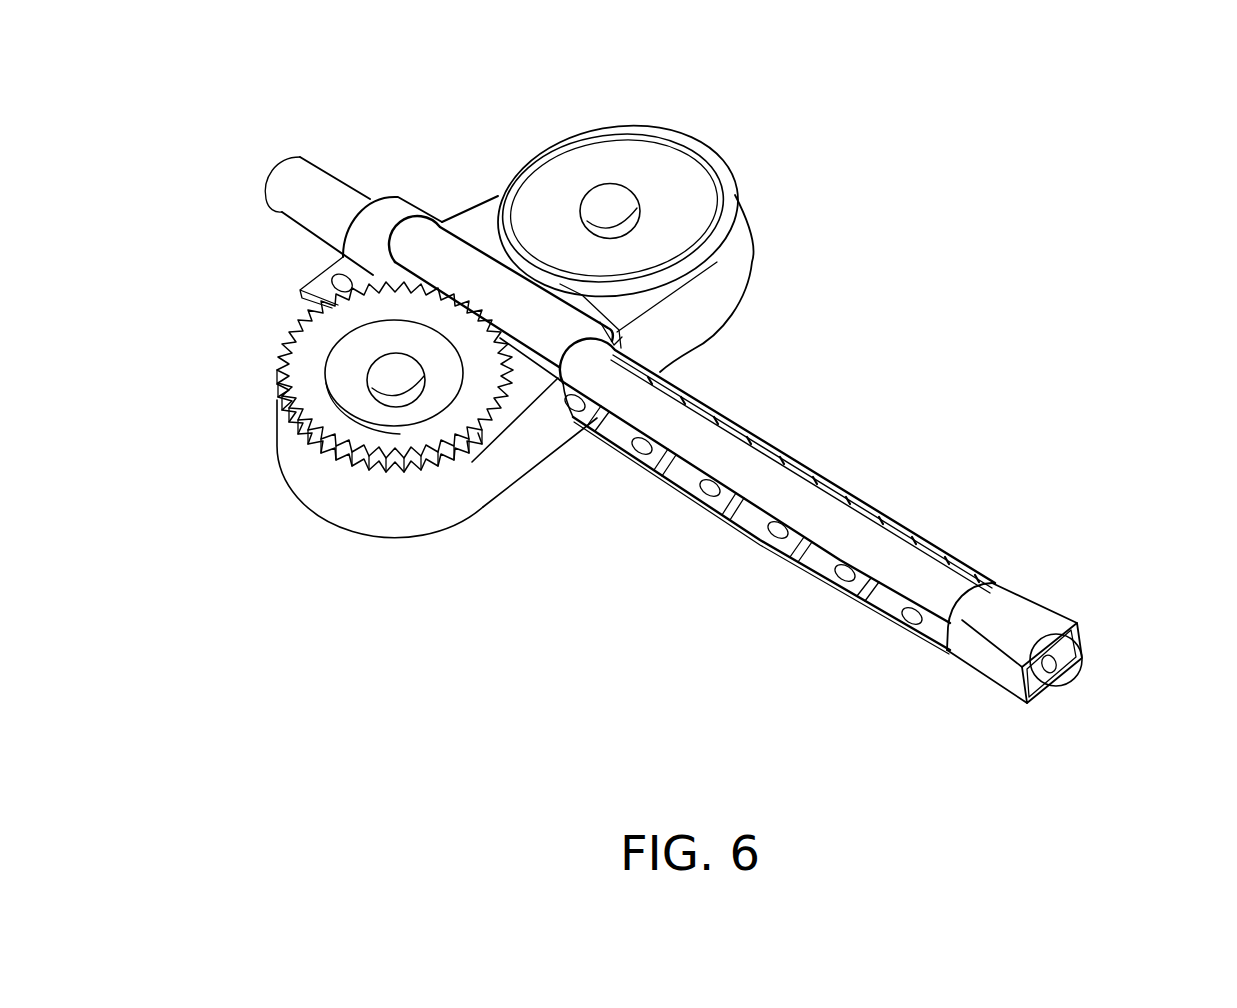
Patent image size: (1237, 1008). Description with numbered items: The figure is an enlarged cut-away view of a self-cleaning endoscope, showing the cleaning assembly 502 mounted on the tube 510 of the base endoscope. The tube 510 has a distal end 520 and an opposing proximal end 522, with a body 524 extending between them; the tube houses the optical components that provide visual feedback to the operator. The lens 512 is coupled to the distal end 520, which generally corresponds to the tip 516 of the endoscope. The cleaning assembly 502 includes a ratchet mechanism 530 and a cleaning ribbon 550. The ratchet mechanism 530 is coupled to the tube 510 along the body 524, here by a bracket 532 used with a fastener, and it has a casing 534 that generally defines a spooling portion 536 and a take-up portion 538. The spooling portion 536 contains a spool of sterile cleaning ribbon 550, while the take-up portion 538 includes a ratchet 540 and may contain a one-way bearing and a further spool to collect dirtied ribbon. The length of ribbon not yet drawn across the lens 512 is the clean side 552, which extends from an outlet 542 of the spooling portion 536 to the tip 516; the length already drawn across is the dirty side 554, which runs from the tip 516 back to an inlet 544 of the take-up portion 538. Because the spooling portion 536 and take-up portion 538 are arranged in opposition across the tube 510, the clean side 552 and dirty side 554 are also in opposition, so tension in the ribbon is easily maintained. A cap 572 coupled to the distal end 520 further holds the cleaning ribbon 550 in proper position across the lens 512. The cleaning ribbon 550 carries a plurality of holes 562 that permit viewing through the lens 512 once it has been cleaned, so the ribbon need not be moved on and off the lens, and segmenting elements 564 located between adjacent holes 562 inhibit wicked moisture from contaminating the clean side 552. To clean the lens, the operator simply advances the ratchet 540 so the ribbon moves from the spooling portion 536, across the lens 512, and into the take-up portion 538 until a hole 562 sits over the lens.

The cleaning assembly 502 is at (803, 320).
The tube 510 is at (342, 196).
The lens 512 is at (1054, 683).
The tip 516 is at (1028, 745).
The distal end 520 is at (1091, 621).
The proximal end 522 is at (288, 142).
The body 524 is at (690, 440).
The ratchet mechanism 530 is at (487, 198).
The bracket 532 is at (417, 203).
The casing 534 is at (748, 228).
The spooling portion 536 is at (607, 183).
The take-up portion 538 is at (298, 375).
The ratchet 540 is at (290, 413).
The outlet 542 is at (630, 342).
The inlet 544 is at (565, 432).
The cleaning ribbon 550 is at (922, 537).
The clean side 552 is at (772, 445).
The dirty side 554 is at (868, 590).
The holes 562 is at (773, 530).
The segmenting elements 564 is at (800, 458).
The cap 572 is at (1038, 600).